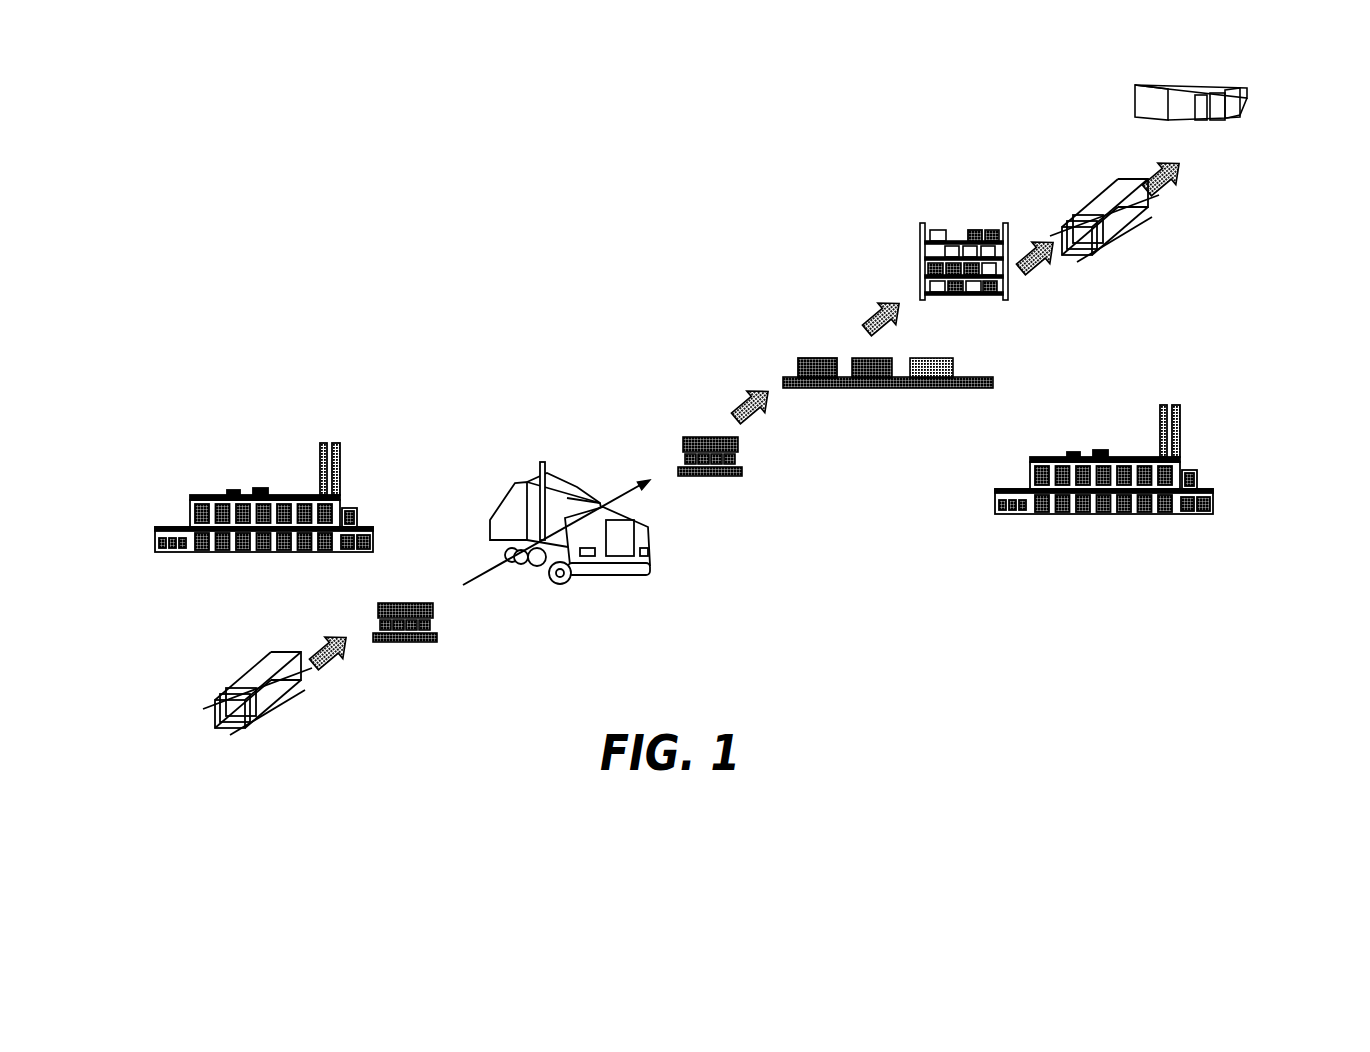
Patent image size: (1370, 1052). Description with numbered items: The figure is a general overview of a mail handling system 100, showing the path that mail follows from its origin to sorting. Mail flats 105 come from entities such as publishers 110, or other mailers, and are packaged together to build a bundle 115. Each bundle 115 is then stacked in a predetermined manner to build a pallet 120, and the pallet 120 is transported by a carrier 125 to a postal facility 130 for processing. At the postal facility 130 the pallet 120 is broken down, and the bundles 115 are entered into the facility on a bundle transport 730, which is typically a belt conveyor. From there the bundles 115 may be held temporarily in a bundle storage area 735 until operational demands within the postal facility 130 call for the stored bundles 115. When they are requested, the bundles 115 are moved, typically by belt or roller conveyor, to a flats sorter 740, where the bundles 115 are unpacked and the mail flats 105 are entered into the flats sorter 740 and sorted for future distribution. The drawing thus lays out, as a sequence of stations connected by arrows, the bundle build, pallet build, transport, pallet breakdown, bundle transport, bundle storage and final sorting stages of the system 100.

The mail handling system 100 is at (400, 259).
The mail flats 105 is at (266, 716).
The publishers 110 is at (358, 518).
The bundle 115 is at (215, 703).
The pallet 120 is at (440, 628).
The carrier 125 is at (650, 573).
The postal facility 130 is at (1183, 455).
The bundle transport 730 is at (993, 382).
The bundle storage area 735 is at (920, 260).
The flats sorter 740 is at (1247, 98).